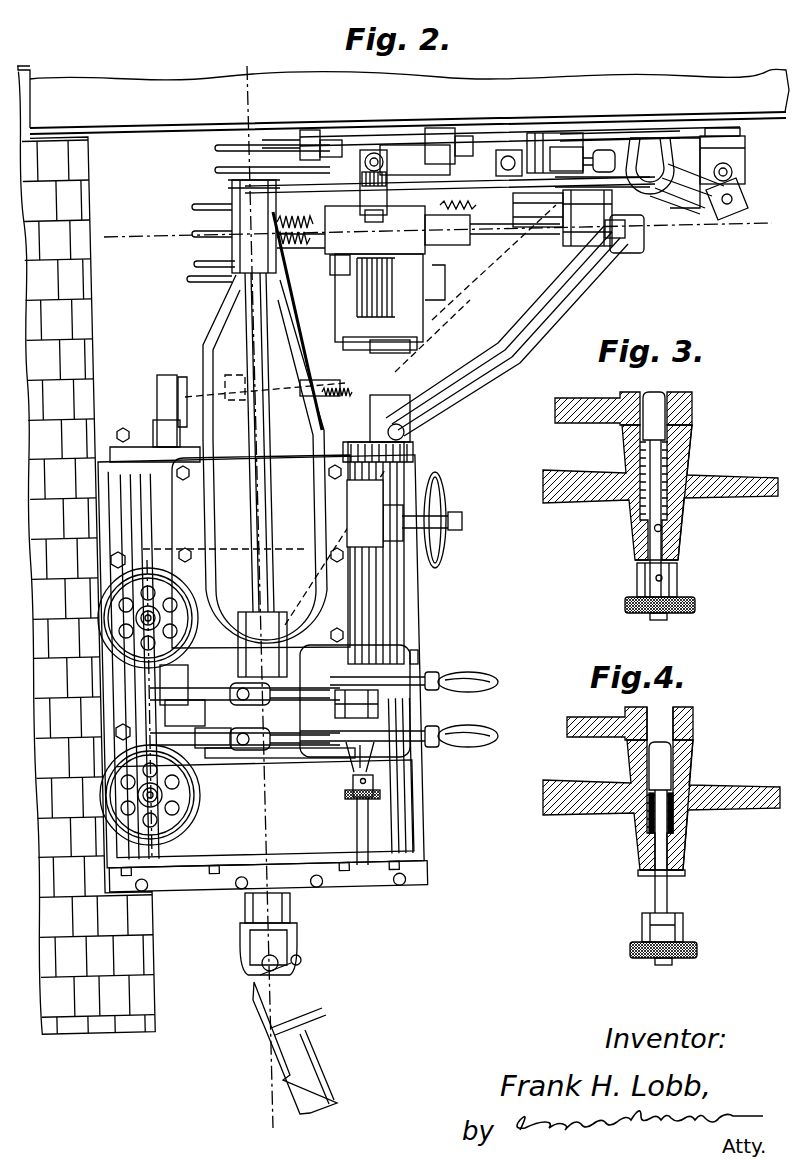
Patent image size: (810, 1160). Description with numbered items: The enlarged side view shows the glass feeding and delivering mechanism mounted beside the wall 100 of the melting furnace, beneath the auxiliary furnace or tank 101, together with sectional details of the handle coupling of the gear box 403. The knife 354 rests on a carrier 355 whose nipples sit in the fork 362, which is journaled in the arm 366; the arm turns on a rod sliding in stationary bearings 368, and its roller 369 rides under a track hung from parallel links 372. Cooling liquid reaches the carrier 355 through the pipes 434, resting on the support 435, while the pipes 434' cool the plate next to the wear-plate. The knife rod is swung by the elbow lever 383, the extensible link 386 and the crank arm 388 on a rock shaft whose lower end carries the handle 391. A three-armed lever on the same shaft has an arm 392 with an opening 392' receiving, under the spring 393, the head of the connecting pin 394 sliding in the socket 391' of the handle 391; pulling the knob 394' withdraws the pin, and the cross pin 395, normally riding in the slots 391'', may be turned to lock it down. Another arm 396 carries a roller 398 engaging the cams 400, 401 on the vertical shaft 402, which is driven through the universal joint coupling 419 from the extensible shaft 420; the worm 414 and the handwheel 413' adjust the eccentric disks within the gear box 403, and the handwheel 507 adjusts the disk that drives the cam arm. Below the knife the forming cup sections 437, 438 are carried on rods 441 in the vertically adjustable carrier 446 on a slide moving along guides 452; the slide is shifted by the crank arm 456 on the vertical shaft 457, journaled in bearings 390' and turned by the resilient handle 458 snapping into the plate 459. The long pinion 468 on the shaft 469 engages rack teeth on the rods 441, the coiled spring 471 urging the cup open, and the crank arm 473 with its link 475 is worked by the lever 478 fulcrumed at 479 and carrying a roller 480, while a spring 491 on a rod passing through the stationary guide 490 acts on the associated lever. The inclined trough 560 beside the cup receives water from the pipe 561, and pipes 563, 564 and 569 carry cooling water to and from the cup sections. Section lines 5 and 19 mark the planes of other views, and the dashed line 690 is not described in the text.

In FIG. 2, the section line 5 is at (252, 1107).
In FIG. 2, the section line 19 is at (758, 238).
In FIG. 2, the wall of glass melting furnace 100 is at (124, 1022).
In FIG. 2, the auxiliary furnace or tank 101 is at (403, 100).
In FIG. 2, the knife 354 is at (558, 150).
In FIG. 2, the knife carrier 355 is at (553, 168).
In FIG. 2, the fork 362 is at (614, 158).
In FIG. 2, the arm 366 is at (678, 205).
In FIG. 2, the stationary bearings 368 is at (656, 140).
In FIG. 2, the roller 369 is at (722, 214).
In FIG. 2, the parallel links 372 is at (742, 160).
In FIG. 2, the elbow lever 383 is at (622, 222).
In FIG. 2, the extensible link 386 is at (405, 195).
In FIG. 2, the crank arm 388 is at (318, 176).
In FIG. 2, the stationary bearings 390' is at (262, 644).
In FIG. 2, the handle 391 is at (399, 744).
In FIG. 3, the handle 391 is at (660, 492).
In FIG. 4, the handle 391 is at (661, 805).
In FIG. 3, the socket 391' is at (704, 492).
In FIG. 4, the socket 391' is at (712, 805).
In FIG. 2, the longitudinal slots 391'' is at (337, 803).
In FIG. 3, the longitudinal slots 391'' is at (684, 552).
In FIG. 4, the longitudinal slots 391'' is at (692, 859).
In FIG. 2, the lever arm 392 is at (387, 704).
In FIG. 3, the lever arm 392 is at (623, 400).
In FIG. 4, the lever arm 392 is at (630, 719).
In FIG. 4, the opening 392' is at (695, 723).
In FIG. 3, the spring 393 is at (672, 462).
In FIG. 4, the spring 393 is at (643, 826).
In FIG. 3, the connecting pin 394 is at (671, 483).
In FIG. 4, the connecting pin 394 is at (689, 842).
In FIG. 2, the knob 394' is at (340, 803).
In FIG. 3, the knob 394' is at (685, 602).
In FIG. 4, the knob 394' is at (685, 947).
In FIG. 3, the cross pin 395 is at (654, 530).
In FIG. 4, the cross pin 395 is at (644, 876).
In FIG. 2, the lever arm 396 is at (200, 720).
In FIG. 2, the roller 398 is at (165, 693).
In FIG. 2, the cam 400 is at (330, 668).
In FIG. 2, the cam 401 is at (222, 752).
In FIG. 2, the vertical shaft 402 is at (258, 908).
In FIG. 2, the gear box 403 is at (98, 523).
In FIG. 2, the handwheel 413' is at (118, 610).
In FIG. 2, the worm 414 is at (100, 791).
In FIG. 2, the universal joint coupling 419 is at (302, 962).
In FIG. 2, the extensible shaft 420 is at (312, 1050).
In FIG. 2, the pipes 434 is at (255, 159).
In FIG. 2, the pipes 434' is at (457, 118).
In FIG. 2, the additional support 435 is at (507, 156).
In FIG. 2, the forming cup section 437 is at (596, 252).
In FIG. 2, the forming cup section 438 is at (560, 290).
In FIG. 2, the parallel horizontal rods 441 is at (472, 268).
In FIG. 2, the vertically adjustable carrier 446 is at (418, 230).
In FIG. 2, the guides 452 is at (436, 130).
In FIG. 2, the crank arm 456 is at (360, 205).
In FIG. 2, the vertical shaft 457 is at (236, 327).
In FIG. 2, the handle 458 is at (430, 676).
In FIG. 2, the plate 459 is at (410, 646).
In FIG. 2, the long pinion 468 is at (395, 290).
In FIG. 2, the vertical shaft 469 is at (412, 356).
In FIG. 2, the coiled spring 471 is at (310, 270).
In FIG. 2, the crank arm 473 is at (333, 386).
In FIG. 2, the link 475 is at (328, 352).
In FIG. 2, the lever 478 is at (182, 378).
In FIG. 2, the fulcrum 479 is at (165, 372).
In FIG. 2, the roller 480 is at (232, 402).
In FIG. 2, the stationary guide 490 is at (420, 408).
In FIG. 2, the spring 491 is at (385, 410).
In FIG. 2, the handwheel 507 is at (450, 500).
In FIG. 2, the inclined trough 560 is at (457, 300).
In FIG. 2, the pipe 561 is at (192, 281).
In FIG. 2, the pipe 563 is at (211, 215).
In FIG. 2, the pipe 564 is at (194, 265).
In FIG. 2, the pipe 569 is at (211, 240).
In FIG. 2, the hidden shaft line 690 is at (222, 546).